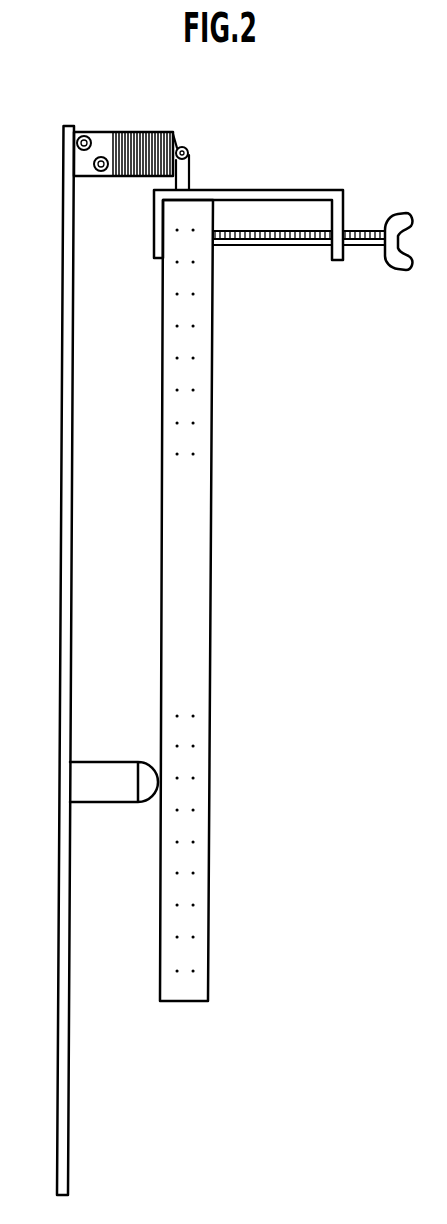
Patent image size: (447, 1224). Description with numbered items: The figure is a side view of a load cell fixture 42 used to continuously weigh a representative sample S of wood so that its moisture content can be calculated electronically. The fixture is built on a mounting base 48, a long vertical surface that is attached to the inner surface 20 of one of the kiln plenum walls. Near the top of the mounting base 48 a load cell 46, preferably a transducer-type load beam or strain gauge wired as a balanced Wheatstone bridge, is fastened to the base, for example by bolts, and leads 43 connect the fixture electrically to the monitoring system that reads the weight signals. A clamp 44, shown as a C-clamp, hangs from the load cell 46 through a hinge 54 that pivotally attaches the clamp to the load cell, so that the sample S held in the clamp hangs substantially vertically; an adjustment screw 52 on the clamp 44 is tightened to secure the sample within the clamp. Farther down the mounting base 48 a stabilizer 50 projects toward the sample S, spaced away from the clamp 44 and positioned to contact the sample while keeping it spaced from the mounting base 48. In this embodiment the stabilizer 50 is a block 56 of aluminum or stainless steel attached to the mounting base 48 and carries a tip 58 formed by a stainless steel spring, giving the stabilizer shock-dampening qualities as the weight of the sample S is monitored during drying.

The inner surface 20 is at (71, 431).
The load cell fixture 42 is at (247, 425).
The leads 43 is at (132, 132).
The clamp 44 is at (310, 190).
The load cell 46 is at (160, 131).
The mounting base 48 is at (67, 280).
The stabilizer 50 is at (101, 750).
The adjustment screw 52 is at (278, 247).
The hinge 54 is at (188, 152).
The block 56 is at (89, 805).
The tip 58 is at (148, 805).
The representative sample S is at (161, 603).